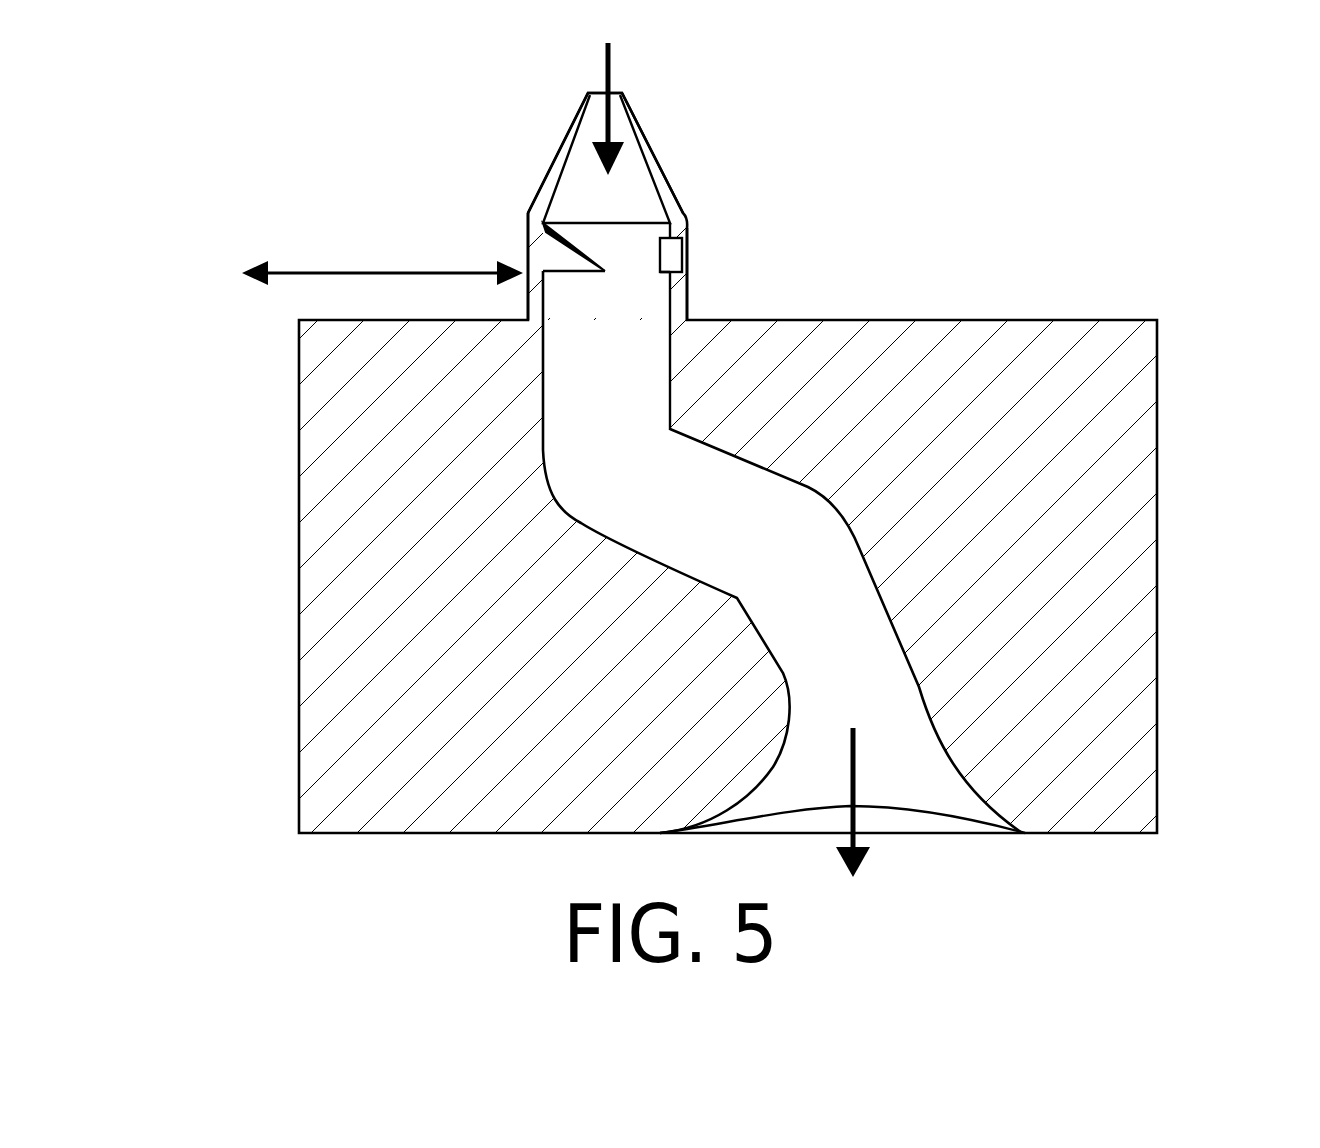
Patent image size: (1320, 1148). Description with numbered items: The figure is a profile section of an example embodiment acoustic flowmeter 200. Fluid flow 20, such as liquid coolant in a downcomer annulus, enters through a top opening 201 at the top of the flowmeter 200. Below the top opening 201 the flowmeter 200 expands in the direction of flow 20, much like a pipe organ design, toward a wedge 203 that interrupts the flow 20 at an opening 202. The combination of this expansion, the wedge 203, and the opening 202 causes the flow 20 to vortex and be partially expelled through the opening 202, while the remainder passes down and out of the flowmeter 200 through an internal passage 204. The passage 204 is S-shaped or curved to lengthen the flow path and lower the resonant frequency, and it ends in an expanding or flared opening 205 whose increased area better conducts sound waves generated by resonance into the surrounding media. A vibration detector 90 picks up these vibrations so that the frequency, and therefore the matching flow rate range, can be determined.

The fluid flow 20 is at (605, 67).
The vibration detector 90 is at (357, 276).
The acoustic flowmeter 200 is at (1057, 141).
The top opening 201 is at (620, 92).
The opening 202 is at (672, 260).
The wedge 203 is at (566, 251).
The internal passage 204 is at (836, 566).
The flared opening 205 is at (982, 824).